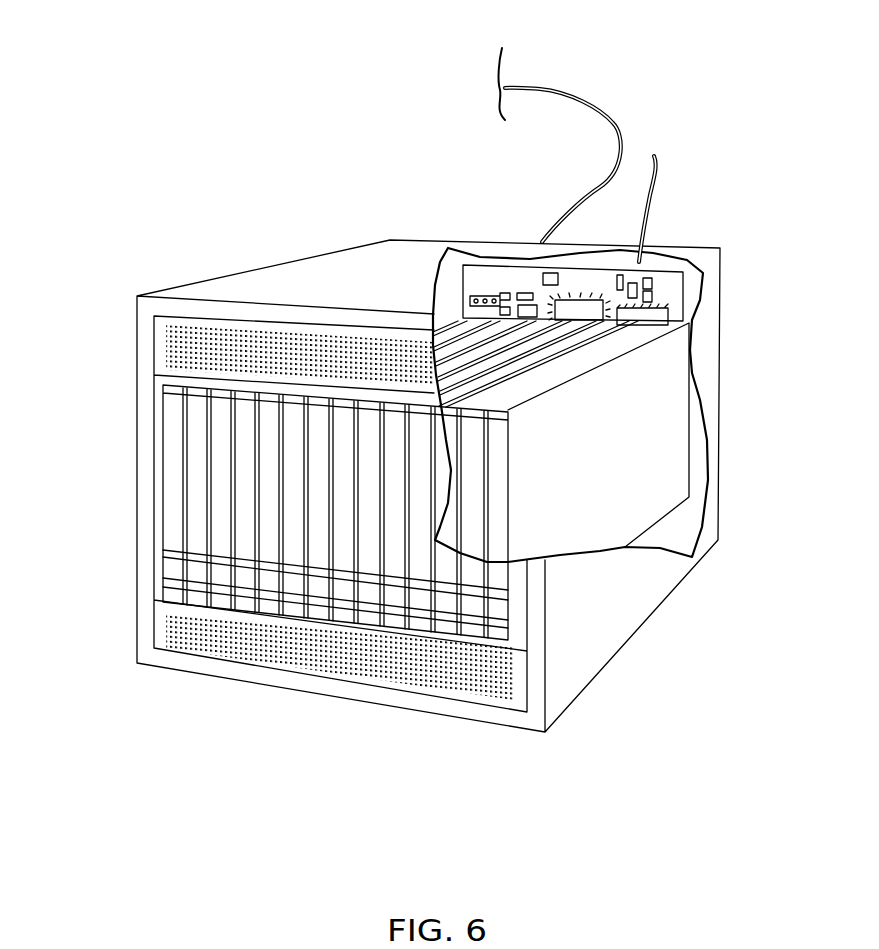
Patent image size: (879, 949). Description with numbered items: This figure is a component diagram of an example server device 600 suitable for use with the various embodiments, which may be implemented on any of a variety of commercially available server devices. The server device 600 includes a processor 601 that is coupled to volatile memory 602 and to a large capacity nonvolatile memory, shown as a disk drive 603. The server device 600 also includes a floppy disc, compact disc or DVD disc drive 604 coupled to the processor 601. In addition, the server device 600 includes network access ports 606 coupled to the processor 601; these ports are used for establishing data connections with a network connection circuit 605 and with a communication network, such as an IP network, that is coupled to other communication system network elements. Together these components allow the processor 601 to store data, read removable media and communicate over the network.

The server device 600 is at (140, 190).
The processor 601 is at (530, 262).
The volatile memory 602 is at (668, 323).
The disk drive 603 is at (222, 443).
The disc drive 604 is at (195, 508).
The network connection circuit 605 is at (470, 315).
The network access ports 606 is at (587, 108).